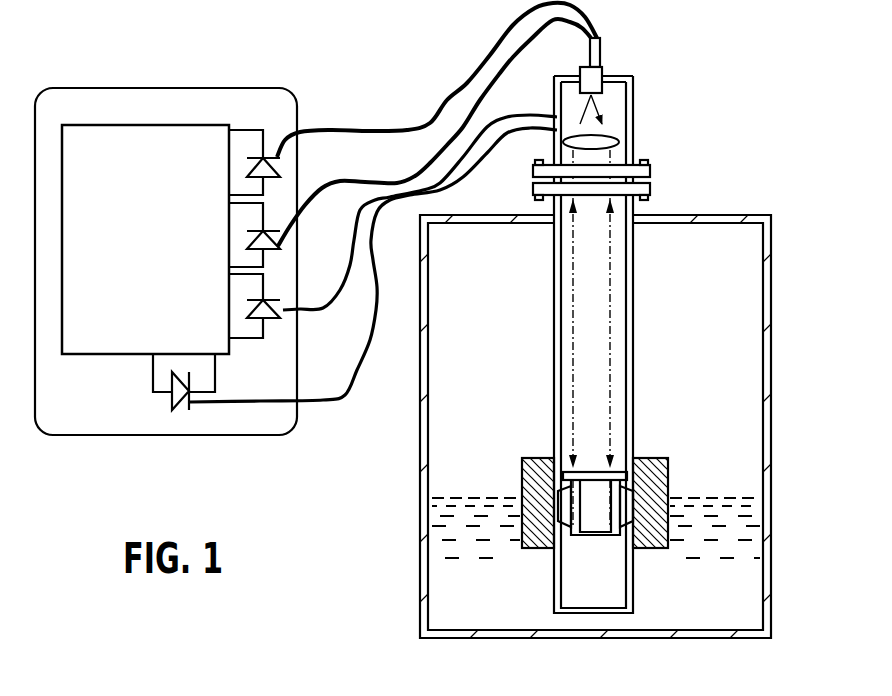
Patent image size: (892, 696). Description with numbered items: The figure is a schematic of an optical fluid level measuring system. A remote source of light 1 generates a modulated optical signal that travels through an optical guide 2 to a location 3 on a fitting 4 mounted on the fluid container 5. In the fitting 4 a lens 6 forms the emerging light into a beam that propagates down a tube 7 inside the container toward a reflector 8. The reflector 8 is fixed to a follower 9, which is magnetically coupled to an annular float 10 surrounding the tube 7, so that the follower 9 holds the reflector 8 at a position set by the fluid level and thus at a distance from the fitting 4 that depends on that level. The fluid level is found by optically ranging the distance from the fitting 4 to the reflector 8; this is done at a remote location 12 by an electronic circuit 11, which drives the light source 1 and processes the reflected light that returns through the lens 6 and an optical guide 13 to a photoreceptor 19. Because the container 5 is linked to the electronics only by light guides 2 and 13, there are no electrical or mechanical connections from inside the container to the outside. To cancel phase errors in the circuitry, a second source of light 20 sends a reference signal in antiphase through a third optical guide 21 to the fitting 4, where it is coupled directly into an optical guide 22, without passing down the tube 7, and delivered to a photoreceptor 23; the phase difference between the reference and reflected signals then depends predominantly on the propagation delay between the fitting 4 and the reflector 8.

The remote source of light 1 is at (270, 157).
The optical guide 2 is at (433, 125).
The location where the measurement is effected 3 is at (607, 66).
The fitting 4 is at (633, 90).
The fluid container 5 is at (420, 466).
The lens 6 is at (620, 145).
The tube 7 is at (635, 345).
The reflector 8 is at (598, 488).
The follower 9 is at (600, 485).
The float 10 is at (670, 480).
The electronic circuit 11 is at (132, 125).
The remote location 12 is at (225, 437).
The optical guide 13 is at (355, 183).
The photoreceptor 19 is at (280, 248).
The second source of light 20 is at (282, 320).
The third optical guide 21 is at (493, 112).
The optical guide 22 is at (371, 357).
The photoreceptor 23 is at (153, 372).